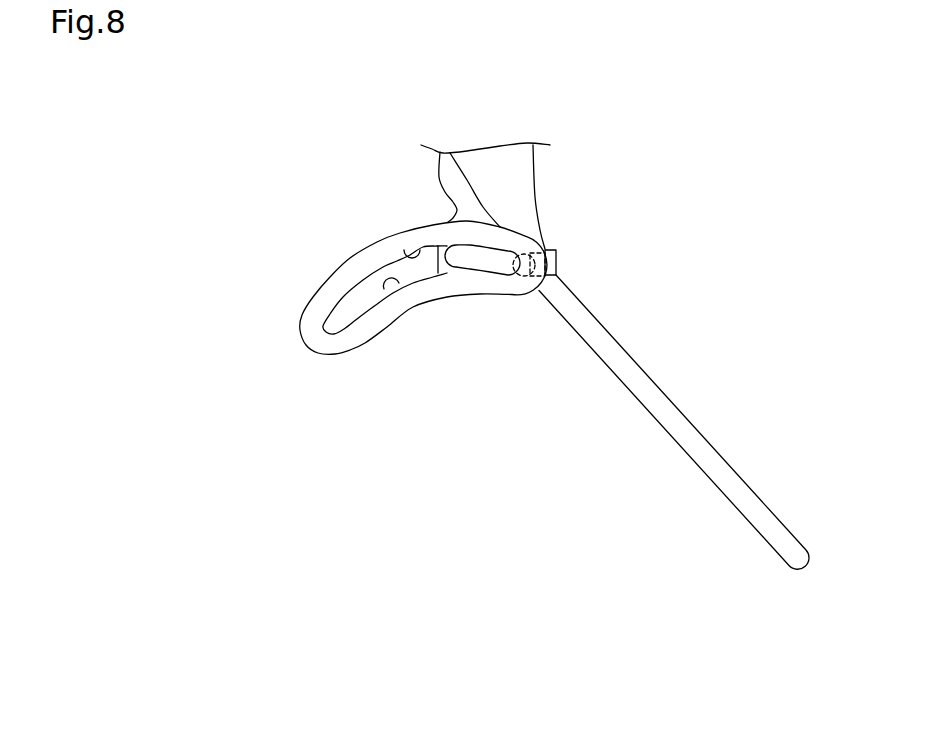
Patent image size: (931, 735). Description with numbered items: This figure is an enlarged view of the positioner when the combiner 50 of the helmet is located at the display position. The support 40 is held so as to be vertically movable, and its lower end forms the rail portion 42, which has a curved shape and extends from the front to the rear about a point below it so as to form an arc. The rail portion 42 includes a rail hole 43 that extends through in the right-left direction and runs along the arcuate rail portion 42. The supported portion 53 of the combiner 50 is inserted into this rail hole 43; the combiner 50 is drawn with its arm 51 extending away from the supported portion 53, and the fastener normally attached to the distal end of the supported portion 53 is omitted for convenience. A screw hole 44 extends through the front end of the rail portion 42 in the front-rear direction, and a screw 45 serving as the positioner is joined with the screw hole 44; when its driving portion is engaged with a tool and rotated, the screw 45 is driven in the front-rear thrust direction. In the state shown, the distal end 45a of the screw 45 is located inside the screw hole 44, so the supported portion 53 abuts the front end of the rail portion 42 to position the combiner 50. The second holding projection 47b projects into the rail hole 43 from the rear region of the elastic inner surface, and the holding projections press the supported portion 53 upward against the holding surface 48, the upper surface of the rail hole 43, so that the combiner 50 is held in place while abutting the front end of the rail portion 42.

The support 40 is at (562, 180).
The rail portion 42 is at (377, 242).
The rail hole 43 is at (397, 283).
The screw hole 44 is at (548, 250).
The screw 45 is at (556, 263).
The distal end 45a is at (513, 277).
The second holding projection 47b is at (357, 310).
The holding surface 48 is at (414, 253).
The combiner 50 is at (674, 422).
The operating arm 51 is at (682, 405).
The supported portion 53 is at (460, 260).